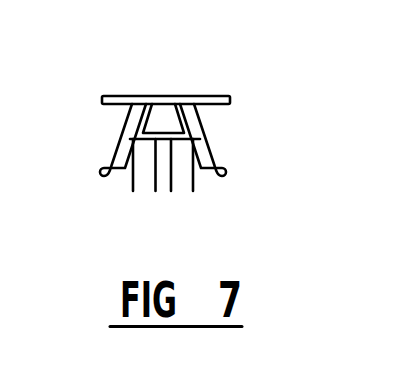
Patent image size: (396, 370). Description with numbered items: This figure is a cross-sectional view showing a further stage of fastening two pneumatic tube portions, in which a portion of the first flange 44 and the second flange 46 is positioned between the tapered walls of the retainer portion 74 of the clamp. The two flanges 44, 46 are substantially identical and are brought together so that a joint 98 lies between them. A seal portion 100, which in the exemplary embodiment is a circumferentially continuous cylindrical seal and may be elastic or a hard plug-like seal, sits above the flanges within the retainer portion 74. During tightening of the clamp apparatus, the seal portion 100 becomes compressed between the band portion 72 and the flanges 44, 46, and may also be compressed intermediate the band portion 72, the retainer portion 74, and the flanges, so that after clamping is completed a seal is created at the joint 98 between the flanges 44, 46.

The seal portion 100 is at (162, 125).
The band portion 72 is at (230, 100).
The retainer portion 74 is at (199, 148).
The joint 98 is at (156, 147).
The first flange 44 is at (150, 182).
The second flange 46 is at (182, 188).